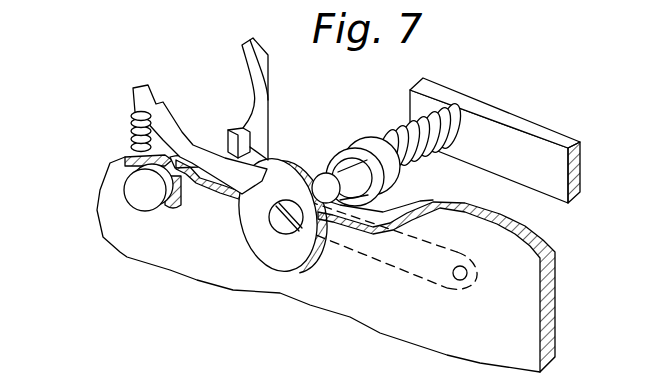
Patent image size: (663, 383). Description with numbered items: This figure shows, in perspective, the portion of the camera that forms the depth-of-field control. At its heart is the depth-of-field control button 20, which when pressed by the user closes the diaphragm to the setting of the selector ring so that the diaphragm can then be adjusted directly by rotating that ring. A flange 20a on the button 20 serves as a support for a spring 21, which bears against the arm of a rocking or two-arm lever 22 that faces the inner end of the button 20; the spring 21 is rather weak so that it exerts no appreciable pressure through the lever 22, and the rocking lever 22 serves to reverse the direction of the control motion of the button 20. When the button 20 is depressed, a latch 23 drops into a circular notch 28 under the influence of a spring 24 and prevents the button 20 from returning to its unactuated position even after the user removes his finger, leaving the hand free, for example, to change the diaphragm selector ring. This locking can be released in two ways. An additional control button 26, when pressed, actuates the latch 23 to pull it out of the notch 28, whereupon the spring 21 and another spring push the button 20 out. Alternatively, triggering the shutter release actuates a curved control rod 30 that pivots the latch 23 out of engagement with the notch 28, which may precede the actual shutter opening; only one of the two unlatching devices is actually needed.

The depth-of-field control button 20 is at (326, 261).
The flange 20a is at (378, 188).
The spring 21 is at (398, 127).
The rocking lever 22 is at (516, 142).
The latch 23 is at (202, 153).
The spring 24 is at (128, 130).
The additional control button 26 is at (135, 205).
The notch 28 is at (326, 186).
The curved control rod 30 is at (243, 62).